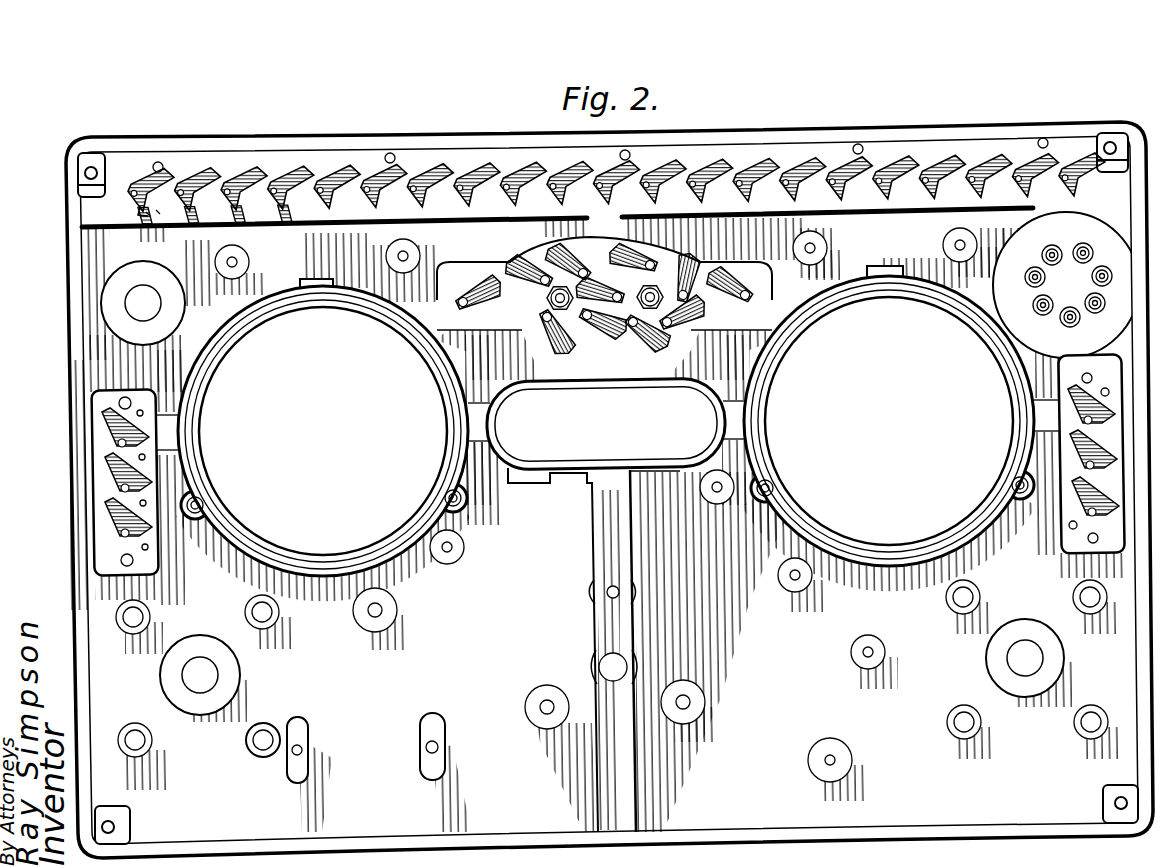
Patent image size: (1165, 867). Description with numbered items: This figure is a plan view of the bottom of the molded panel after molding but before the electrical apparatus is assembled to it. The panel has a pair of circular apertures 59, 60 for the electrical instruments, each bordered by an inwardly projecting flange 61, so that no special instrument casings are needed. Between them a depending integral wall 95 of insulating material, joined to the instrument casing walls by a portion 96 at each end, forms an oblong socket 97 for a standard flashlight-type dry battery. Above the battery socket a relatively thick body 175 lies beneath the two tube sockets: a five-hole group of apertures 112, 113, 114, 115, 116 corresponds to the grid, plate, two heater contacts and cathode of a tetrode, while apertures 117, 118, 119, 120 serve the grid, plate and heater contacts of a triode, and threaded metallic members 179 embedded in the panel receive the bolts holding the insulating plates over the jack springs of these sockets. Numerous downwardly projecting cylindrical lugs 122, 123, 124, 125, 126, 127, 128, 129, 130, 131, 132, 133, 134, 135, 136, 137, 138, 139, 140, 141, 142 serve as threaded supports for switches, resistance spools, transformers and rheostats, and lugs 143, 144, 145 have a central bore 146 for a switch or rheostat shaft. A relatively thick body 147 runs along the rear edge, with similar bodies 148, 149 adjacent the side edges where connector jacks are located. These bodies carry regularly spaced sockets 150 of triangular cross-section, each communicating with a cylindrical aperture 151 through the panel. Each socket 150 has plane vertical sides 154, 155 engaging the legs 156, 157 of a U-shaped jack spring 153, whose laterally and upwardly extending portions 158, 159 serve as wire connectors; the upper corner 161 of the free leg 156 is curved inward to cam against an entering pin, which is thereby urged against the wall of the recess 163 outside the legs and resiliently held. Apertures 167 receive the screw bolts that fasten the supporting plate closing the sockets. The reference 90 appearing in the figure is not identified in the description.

The thick body 147 is at (118, 178).
The jack spring 153 is at (152, 192).
The apertures 167 is at (162, 163).
The leg of jack spring 156 is at (192, 192).
The leg of jack spring 157 is at (238, 195).
The recess 163 is at (114, 441).
The upper corner 161 is at (138, 212).
The laterally and upwardly extending portion 158 is at (142, 222).
The laterally and upwardly extending portion 159 is at (162, 222).
The bore 146 is at (150, 300).
The lug 142 is at (249, 258).
The lug 143 is at (186, 312).
The lug 141 is at (416, 250).
The thick body 175 is at (545, 262).
The aperture 117 is at (574, 262).
The aperture 112 is at (652, 266).
The aperture 118 is at (530, 272).
The aperture 113 is at (632, 290).
The aperture 119 is at (548, 312).
The aperture 116 is at (694, 316).
The aperture 115 is at (665, 330).
The aperture 114 is at (604, 330).
The threaded metallic member 179 is at (570, 330).
The aperture 120 is at (563, 313).
The depending integral wall 95 is at (650, 312).
The oblong socket 97 is at (616, 390).
The portion 96 is at (480, 432).
The neck 90 is at (735, 416).
The circular aperture 60 is at (452, 427).
The inwardly projecting flange 61 is at (447, 450).
The circular aperture 59 is at (1018, 424).
The lug 140 is at (824, 250).
The lug 139 is at (943, 246).
The socket 150 is at (105, 425).
The plane vertical side 154 is at (115, 476).
The body 148 is at (105, 525).
The cylindrical aperture 151 is at (125, 440).
The plane vertical side 155 is at (158, 466).
The lug 128 is at (462, 545).
The lug 122 is at (148, 610).
The lug 124 is at (279, 610).
The lug 125 is at (392, 604).
The lug 144 is at (250, 678).
The lug 126 is at (302, 724).
The lug 127 is at (440, 715).
The lug 129 is at (545, 688).
The lug 130 is at (690, 688).
The lug 131 is at (712, 500).
The lug 132 is at (788, 590).
The lug 123 is at (152, 737).
The body 149 is at (1062, 508).
The lug 135 is at (948, 608).
The lug 145 is at (1025, 625).
The lug 138 is at (1097, 612).
The lug 133 is at (853, 768).
The lug 134 is at (868, 670).
The lug 136 is at (970, 740).
The lug 137 is at (1080, 738).